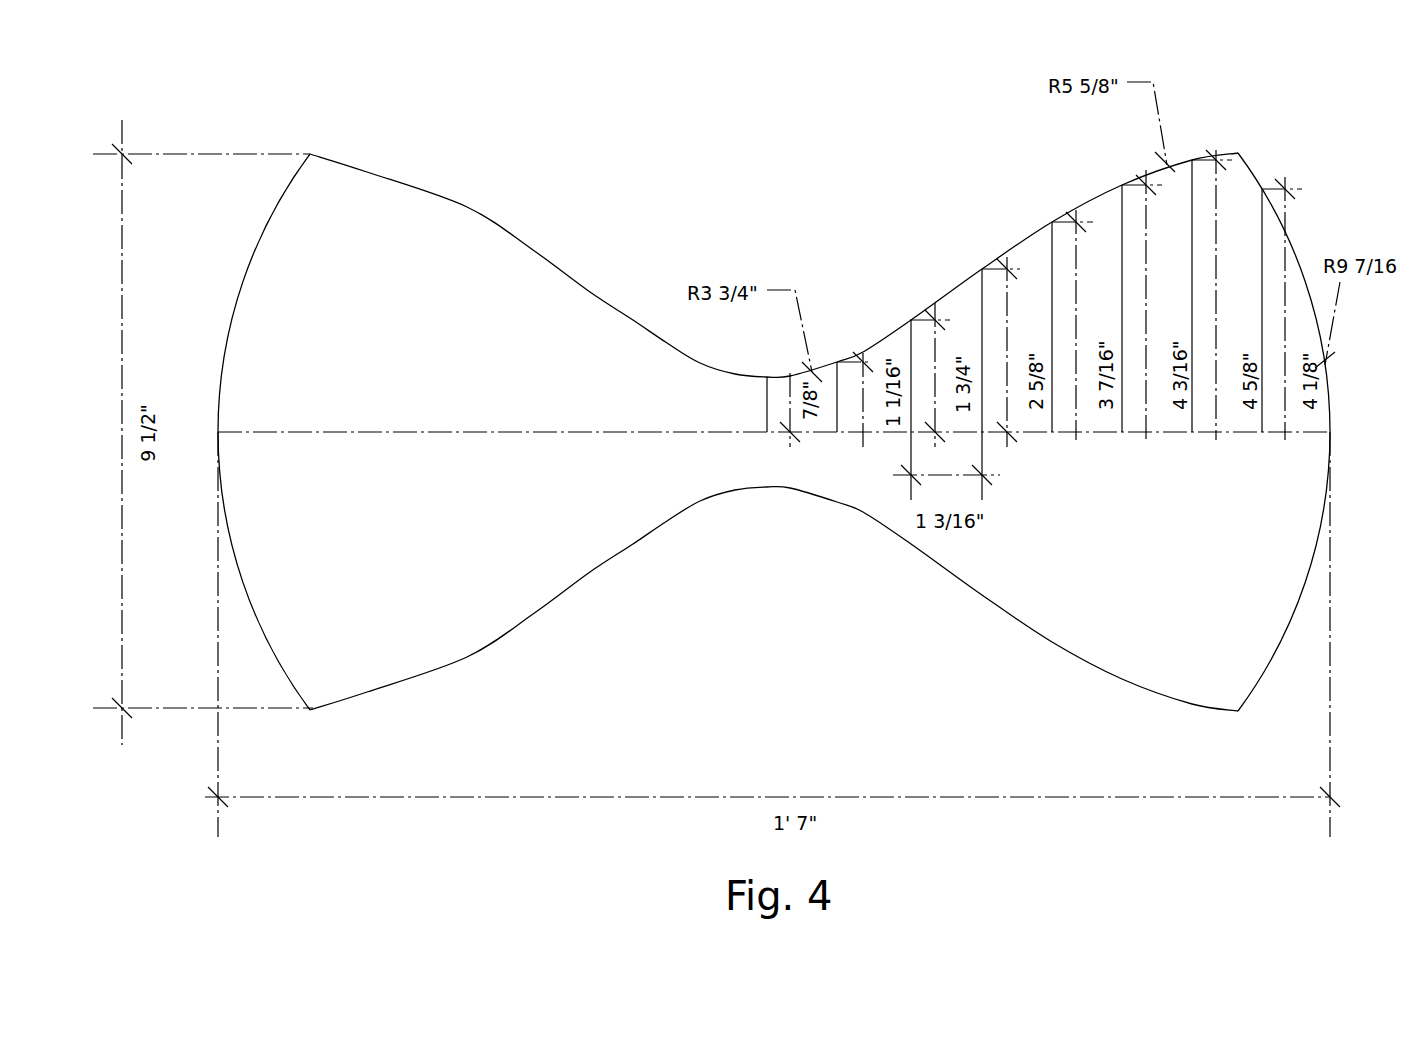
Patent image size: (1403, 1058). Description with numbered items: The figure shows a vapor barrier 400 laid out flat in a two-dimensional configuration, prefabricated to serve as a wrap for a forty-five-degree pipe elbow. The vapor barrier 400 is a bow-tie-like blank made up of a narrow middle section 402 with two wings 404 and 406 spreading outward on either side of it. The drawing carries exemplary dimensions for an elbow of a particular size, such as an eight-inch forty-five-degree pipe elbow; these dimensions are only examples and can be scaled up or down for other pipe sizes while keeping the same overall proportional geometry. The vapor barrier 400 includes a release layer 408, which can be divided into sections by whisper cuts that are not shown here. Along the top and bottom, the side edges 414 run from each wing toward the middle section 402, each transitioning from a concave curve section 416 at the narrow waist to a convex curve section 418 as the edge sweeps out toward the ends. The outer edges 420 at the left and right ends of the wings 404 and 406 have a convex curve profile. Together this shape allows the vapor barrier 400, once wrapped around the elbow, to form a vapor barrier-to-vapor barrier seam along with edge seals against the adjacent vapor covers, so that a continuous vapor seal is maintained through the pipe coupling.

The vapor barrier 400 is at (741, 98).
The middle section 402 is at (823, 368).
The wing 404 is at (1058, 212).
The wing 406 is at (463, 207).
The release layer 408 is at (537, 372).
The side edges 414 is at (590, 292).
The concave curve section 416 is at (767, 490).
The convex curve section 418 is at (463, 658).
The outer edges 420 is at (241, 283).